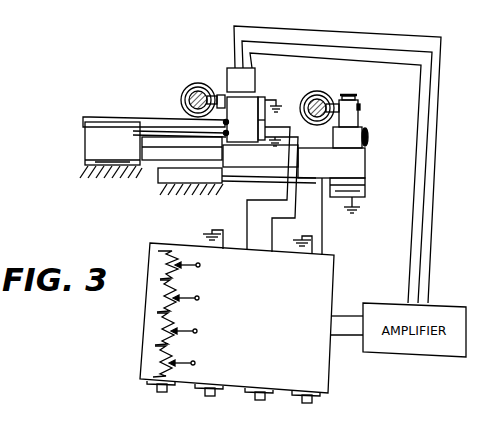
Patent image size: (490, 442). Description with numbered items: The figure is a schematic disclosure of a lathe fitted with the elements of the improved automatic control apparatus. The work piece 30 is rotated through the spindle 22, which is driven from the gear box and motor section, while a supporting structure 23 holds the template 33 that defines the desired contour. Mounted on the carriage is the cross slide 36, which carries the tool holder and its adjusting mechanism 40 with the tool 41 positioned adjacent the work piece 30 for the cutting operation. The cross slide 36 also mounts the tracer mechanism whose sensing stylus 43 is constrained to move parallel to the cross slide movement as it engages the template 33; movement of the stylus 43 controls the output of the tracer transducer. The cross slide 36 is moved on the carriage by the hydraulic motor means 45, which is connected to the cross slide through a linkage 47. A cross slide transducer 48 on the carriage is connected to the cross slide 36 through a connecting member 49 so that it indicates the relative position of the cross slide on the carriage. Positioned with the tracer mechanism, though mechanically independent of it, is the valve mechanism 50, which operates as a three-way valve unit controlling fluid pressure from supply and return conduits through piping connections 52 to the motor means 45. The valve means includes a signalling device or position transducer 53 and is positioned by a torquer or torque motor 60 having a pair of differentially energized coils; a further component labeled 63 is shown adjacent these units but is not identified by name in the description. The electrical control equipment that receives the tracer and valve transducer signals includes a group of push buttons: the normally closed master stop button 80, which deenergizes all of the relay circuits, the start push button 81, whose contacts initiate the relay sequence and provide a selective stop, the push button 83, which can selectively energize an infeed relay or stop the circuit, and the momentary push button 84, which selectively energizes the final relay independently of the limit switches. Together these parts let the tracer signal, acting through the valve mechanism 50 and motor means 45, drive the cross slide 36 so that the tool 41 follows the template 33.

The spindle 22 is at (324, 97).
The supporting structure 23 is at (183, 96).
The work piece 30 is at (319, 93).
The template 33 is at (183, 113).
The cross slide 36 is at (334, 173).
The tool holder and adjusting mechanism 40 is at (368, 138).
The tool 41 is at (360, 105).
The sensing stylus 43 is at (213, 96).
The motor means 45 is at (88, 143).
The linkage 47 is at (168, 150).
The cross slide transducer 48 is at (366, 191).
The connecting member 49 is at (250, 182).
The valve mechanism 50 is at (253, 139).
The piping connections 52 is at (150, 120).
The position transducer 53 is at (248, 141).
The torque motor 60 is at (252, 90).
The coil 63 is at (262, 112).
The push button 80 is at (160, 392).
The push button 81 is at (207, 396).
The push button 83 is at (257, 400).
The push button 84 is at (304, 402).